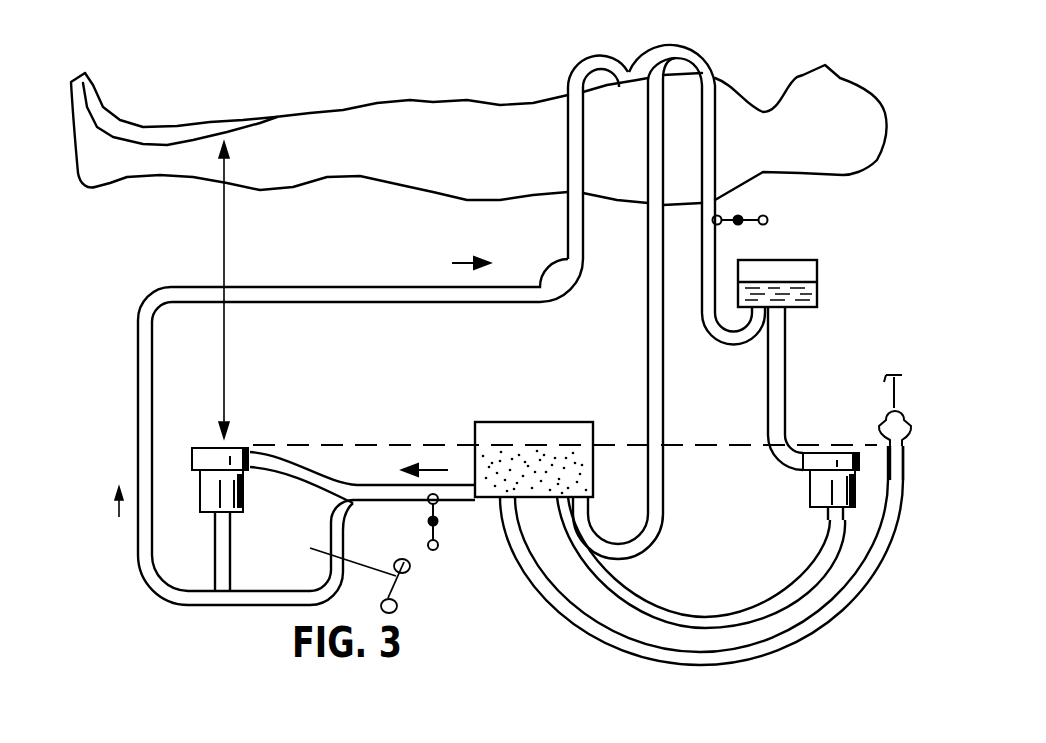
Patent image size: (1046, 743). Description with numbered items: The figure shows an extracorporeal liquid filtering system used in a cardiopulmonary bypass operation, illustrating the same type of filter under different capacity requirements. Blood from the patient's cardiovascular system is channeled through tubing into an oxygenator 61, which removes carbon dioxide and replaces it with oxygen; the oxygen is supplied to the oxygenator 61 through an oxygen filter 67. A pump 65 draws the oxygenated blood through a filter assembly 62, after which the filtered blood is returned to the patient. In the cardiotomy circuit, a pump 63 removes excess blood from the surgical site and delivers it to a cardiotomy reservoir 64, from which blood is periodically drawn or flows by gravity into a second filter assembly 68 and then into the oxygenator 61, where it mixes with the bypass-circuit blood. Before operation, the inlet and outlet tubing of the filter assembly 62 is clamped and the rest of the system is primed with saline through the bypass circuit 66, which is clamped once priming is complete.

The oxygenator 61 is at (498, 498).
The filter assembly 62 is at (238, 443).
The pump 63 is at (760, 224).
The cardiotomy reservoir 64 is at (818, 275).
The pump 65 is at (436, 537).
The bypass circuit 66 is at (352, 481).
The oxygen filter 67 is at (907, 430).
The filter assembly 68 is at (823, 453).